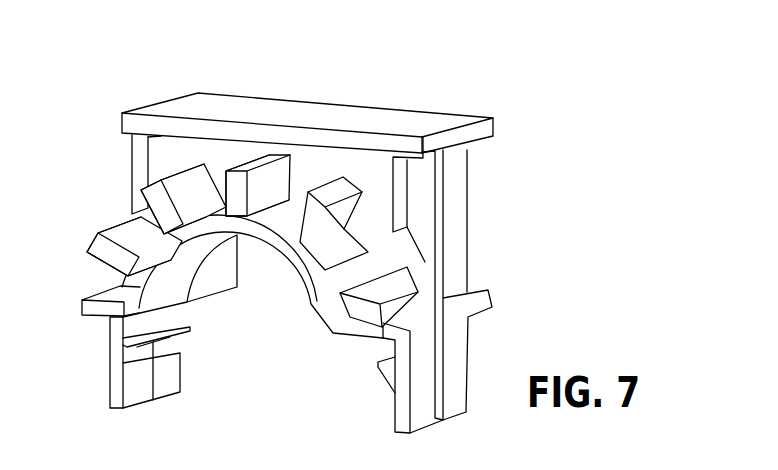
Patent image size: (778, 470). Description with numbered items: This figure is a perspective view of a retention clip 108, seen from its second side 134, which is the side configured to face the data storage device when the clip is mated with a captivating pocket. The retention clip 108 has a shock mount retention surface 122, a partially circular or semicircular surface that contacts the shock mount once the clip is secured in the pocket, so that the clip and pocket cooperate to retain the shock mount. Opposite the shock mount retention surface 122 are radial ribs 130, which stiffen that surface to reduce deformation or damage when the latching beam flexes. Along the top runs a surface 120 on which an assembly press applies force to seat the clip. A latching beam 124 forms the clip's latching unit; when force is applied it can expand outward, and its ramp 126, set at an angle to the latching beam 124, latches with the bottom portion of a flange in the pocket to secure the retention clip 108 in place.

The retention clip 108 is at (482, 84).
The surface 120 is at (363, 99).
The shock mount retention surface 122 is at (297, 270).
The latching beam 124 is at (153, 397).
The ramp 126 is at (193, 330).
The radial ribs 130 is at (267, 176).
The second side 134 is at (161, 148).